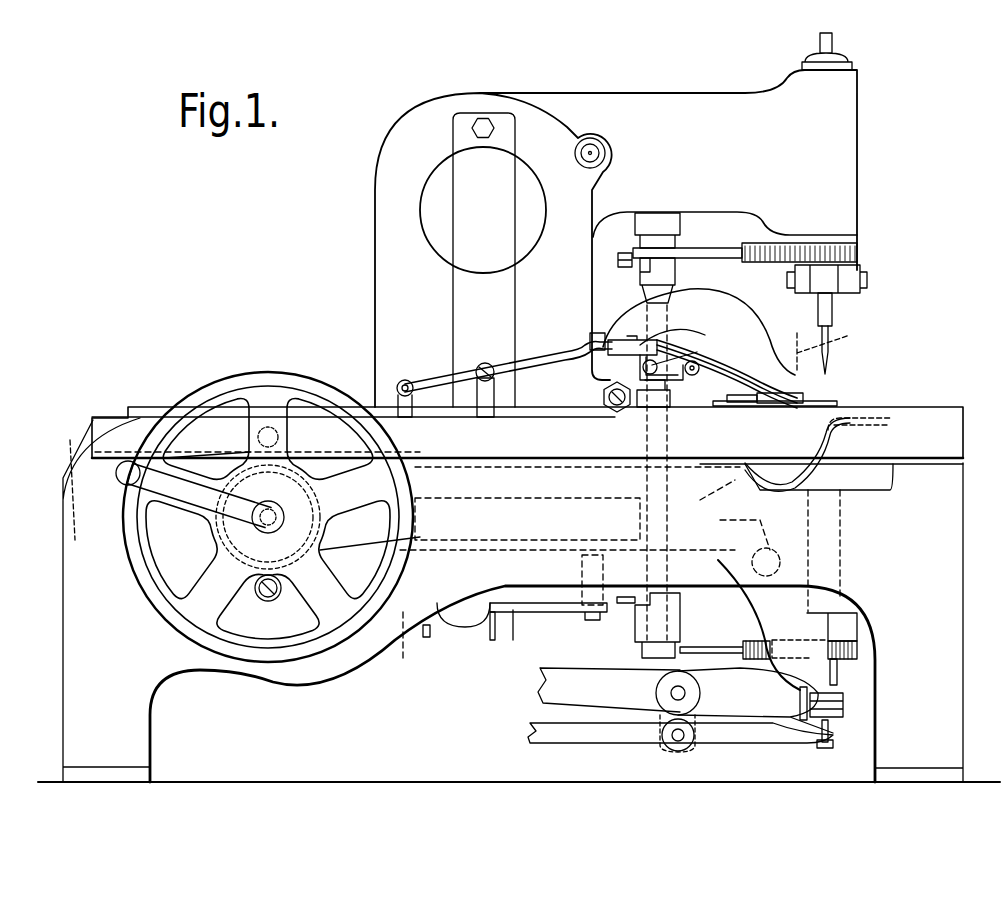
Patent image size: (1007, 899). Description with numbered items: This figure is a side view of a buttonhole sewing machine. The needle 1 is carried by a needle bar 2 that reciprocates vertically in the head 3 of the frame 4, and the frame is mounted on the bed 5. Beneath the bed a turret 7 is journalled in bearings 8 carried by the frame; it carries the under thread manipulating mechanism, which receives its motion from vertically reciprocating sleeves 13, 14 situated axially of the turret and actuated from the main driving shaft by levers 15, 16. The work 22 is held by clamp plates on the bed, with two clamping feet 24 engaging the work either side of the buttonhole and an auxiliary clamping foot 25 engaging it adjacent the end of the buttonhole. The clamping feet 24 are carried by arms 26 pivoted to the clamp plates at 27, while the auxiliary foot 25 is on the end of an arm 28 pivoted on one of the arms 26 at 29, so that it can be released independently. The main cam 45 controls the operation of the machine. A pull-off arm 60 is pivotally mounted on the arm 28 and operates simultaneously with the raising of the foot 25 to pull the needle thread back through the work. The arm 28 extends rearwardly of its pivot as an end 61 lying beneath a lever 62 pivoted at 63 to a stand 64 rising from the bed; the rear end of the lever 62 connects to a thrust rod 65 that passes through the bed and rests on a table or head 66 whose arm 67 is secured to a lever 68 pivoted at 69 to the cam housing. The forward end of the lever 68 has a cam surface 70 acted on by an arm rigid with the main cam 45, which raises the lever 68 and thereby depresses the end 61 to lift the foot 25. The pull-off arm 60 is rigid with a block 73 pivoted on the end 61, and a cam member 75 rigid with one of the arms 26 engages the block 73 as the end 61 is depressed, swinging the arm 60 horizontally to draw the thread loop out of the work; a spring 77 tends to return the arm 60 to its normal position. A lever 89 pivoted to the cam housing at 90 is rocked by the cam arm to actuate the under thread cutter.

The needle 1 is at (825, 353).
The needle bar 2 is at (832, 310).
The head 3 is at (845, 186).
The frame 4 is at (400, 292).
The bed 5 is at (947, 418).
The turret 7 is at (845, 560).
The bearings 8 is at (845, 628).
The vertically-reciprocating sleeve 13 is at (843, 690).
The vertically-reciprocating sleeve 14 is at (838, 740).
The lever 15 is at (602, 680).
The lever 16 is at (617, 744).
The work 22 is at (835, 405).
The clamping feet 24 is at (755, 404).
The auxiliary clamping foot 25 is at (800, 405).
The arms 26 is at (703, 400).
The pivot 27 is at (640, 407).
The lever or arm 28 is at (737, 357).
The pivot 29 is at (692, 375).
The main cam 45 is at (565, 545).
The pull-off arm 60 is at (788, 383).
The rear end of arm 28 61 is at (605, 340).
The lever 62 is at (542, 350).
The pivot 63 is at (476, 368).
The stand 64 is at (495, 398).
The thrust rod 65 is at (418, 452).
The table or head 66 is at (448, 548).
The arm 67 is at (437, 628).
The lever 68 is at (408, 658).
The pivot 69 is at (268, 601).
The cam surface 70 is at (483, 628).
The head or block 73 is at (652, 342).
The cam member 75 is at (633, 366).
The spring 77 is at (697, 352).
The lever 89 is at (790, 480).
The pivot 90 is at (588, 630).